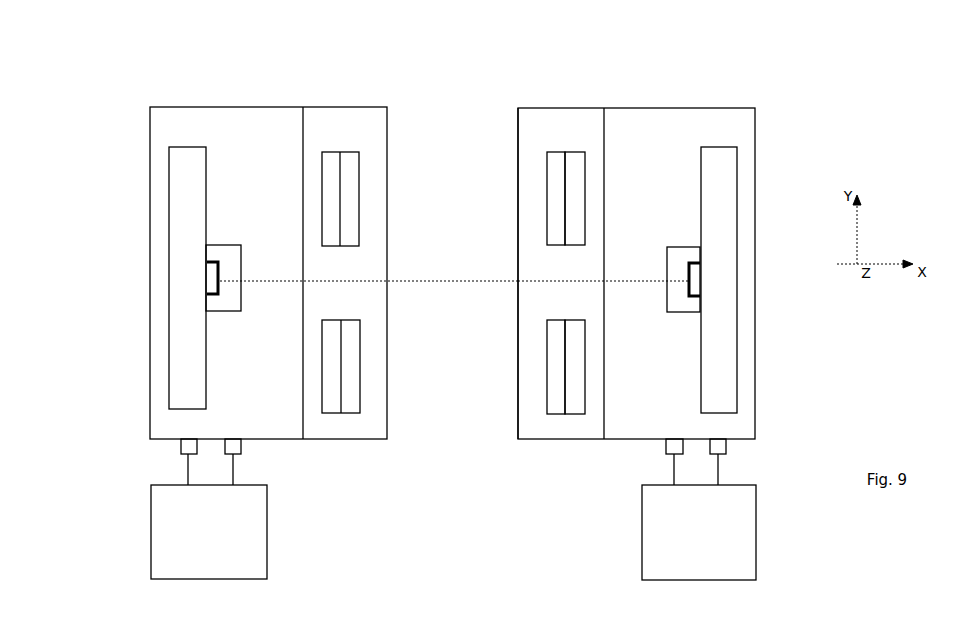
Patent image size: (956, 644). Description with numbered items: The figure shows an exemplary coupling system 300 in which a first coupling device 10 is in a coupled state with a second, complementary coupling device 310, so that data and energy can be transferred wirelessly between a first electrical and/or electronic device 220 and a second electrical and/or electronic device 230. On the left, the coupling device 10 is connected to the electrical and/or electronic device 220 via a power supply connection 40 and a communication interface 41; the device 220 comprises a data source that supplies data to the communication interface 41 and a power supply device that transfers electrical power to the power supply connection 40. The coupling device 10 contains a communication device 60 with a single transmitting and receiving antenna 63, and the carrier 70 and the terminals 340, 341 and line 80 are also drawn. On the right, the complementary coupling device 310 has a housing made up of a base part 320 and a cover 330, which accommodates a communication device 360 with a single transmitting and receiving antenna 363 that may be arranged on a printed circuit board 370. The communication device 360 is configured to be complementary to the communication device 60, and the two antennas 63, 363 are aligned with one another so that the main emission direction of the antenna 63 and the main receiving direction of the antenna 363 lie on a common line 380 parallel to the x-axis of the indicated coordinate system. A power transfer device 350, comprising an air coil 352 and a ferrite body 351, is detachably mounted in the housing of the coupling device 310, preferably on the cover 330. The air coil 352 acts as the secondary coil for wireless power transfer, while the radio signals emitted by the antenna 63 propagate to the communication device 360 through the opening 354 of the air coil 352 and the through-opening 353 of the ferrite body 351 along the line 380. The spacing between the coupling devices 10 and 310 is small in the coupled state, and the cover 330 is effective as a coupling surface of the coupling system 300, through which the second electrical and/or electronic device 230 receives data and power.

The coupling device 10 is at (303, 87).
The movable lens carrier 70 is at (183, 176).
The transmitting and receiving antenna 63 is at (206, 262).
The communication device 60 is at (227, 308).
The communication interface 41 is at (181, 448).
The power supply connection 40 is at (242, 448).
The first electrical and/or electronic device 220 is at (267, 529).
The optical axis 80 is at (430, 282).
The coupling system 300 is at (437, 89).
The complementary coupling device 310 is at (608, 88).
The base part 320 is at (755, 420).
The cover 330 is at (518, 408).
The power transfer device 350 is at (519, 146).
The ferrite body 351 is at (578, 152).
The air coil 352 is at (555, 152).
The through-opening 353 is at (577, 250).
The opening 354 is at (562, 250).
The communication device 360 is at (677, 247).
The transmitting and receiving antenna 363 is at (698, 266).
The printed circuit board 370 is at (737, 180).
The common line 380 is at (632, 282).
The connector terminal 340 is at (665, 447).
The connector terminal 341 is at (726, 448).
The second electrical and/or electronic device 230 is at (756, 529).